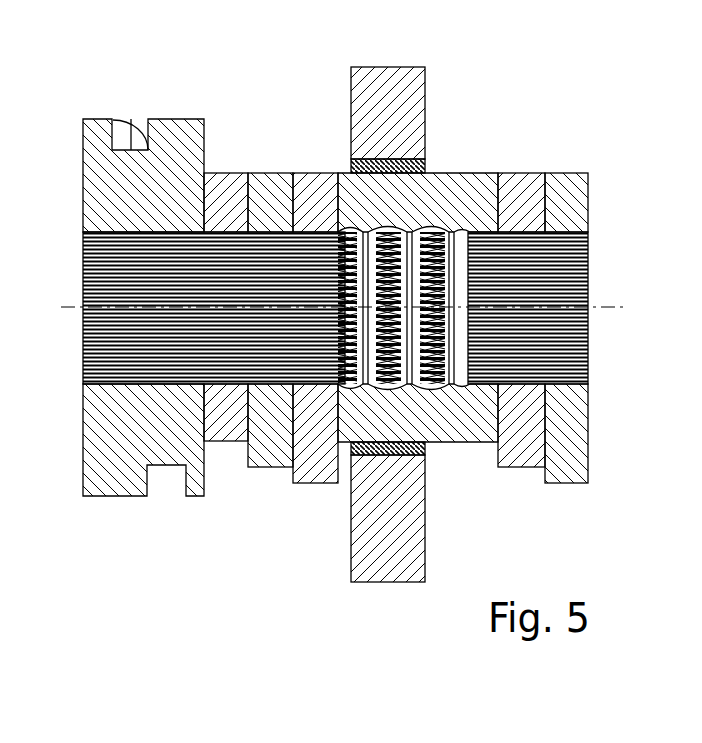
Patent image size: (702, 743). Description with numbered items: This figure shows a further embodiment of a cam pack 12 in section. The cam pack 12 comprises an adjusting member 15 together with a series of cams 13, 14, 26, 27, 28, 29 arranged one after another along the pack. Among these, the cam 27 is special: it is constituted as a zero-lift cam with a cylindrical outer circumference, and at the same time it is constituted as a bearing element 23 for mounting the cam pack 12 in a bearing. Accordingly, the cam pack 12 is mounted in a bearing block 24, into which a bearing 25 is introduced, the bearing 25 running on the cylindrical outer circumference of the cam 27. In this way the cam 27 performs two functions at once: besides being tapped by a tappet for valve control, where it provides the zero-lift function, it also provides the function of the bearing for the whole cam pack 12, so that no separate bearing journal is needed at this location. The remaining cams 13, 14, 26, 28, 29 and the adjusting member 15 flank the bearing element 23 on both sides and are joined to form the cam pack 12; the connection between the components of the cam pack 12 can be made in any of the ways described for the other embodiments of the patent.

The cam pack 12 is at (279, 588).
The cam 13 is at (225, 441).
The cam 14 is at (272, 467).
The adjusting member 15 is at (115, 496).
The bearing element 23 is at (352, 192).
The bearing block 24 is at (425, 90).
The bearing 25 is at (426, 167).
The cam 26 is at (315, 483).
The cam 27 is at (465, 442).
The cam 28 is at (518, 467).
The cam 29 is at (570, 483).